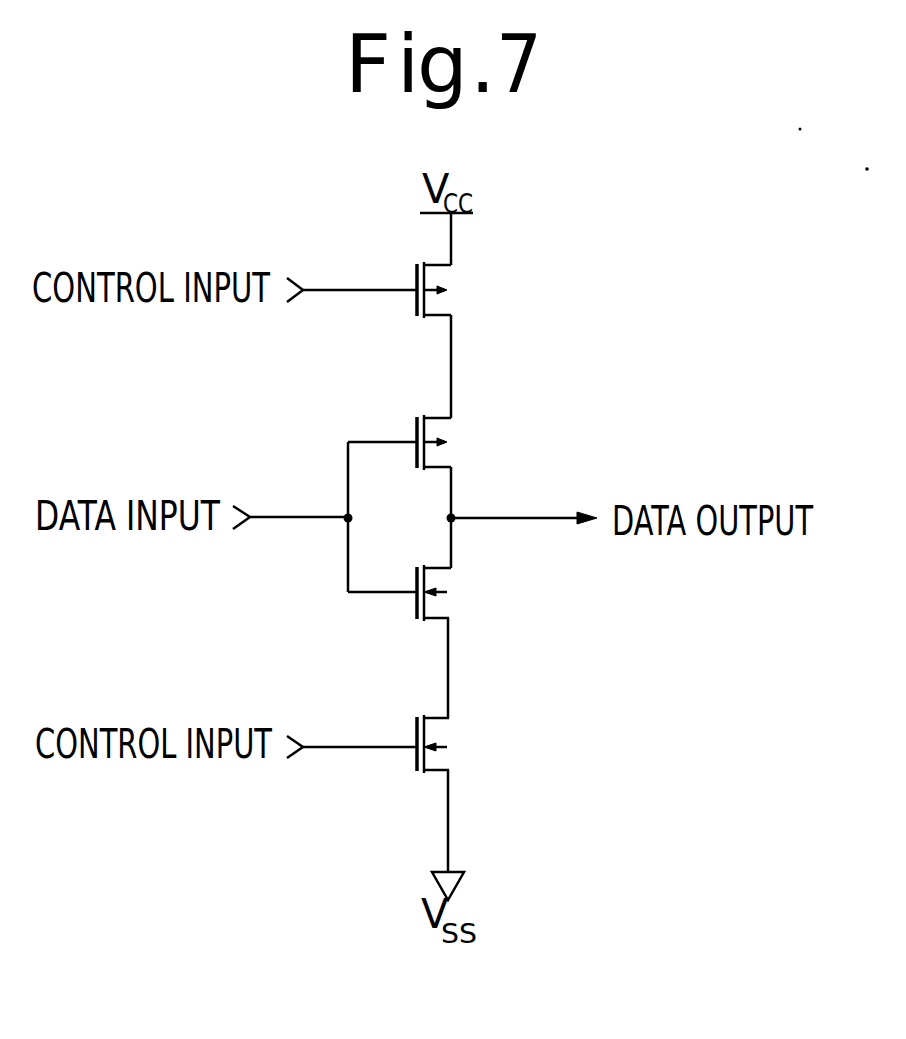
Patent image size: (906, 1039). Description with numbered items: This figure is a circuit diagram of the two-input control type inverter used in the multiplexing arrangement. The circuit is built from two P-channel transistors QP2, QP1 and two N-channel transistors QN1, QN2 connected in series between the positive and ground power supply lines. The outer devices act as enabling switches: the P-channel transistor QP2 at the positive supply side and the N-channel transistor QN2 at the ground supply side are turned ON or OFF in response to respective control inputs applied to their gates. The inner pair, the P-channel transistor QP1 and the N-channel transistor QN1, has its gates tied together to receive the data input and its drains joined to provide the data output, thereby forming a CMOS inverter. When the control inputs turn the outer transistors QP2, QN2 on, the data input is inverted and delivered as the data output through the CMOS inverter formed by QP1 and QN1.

The P-channel transistor QP2 is at (458, 276).
The P-channel transistor QP1 is at (472, 445).
The N-channel transistor QN1 is at (462, 598).
The N-channel transistor QN2 is at (455, 754).